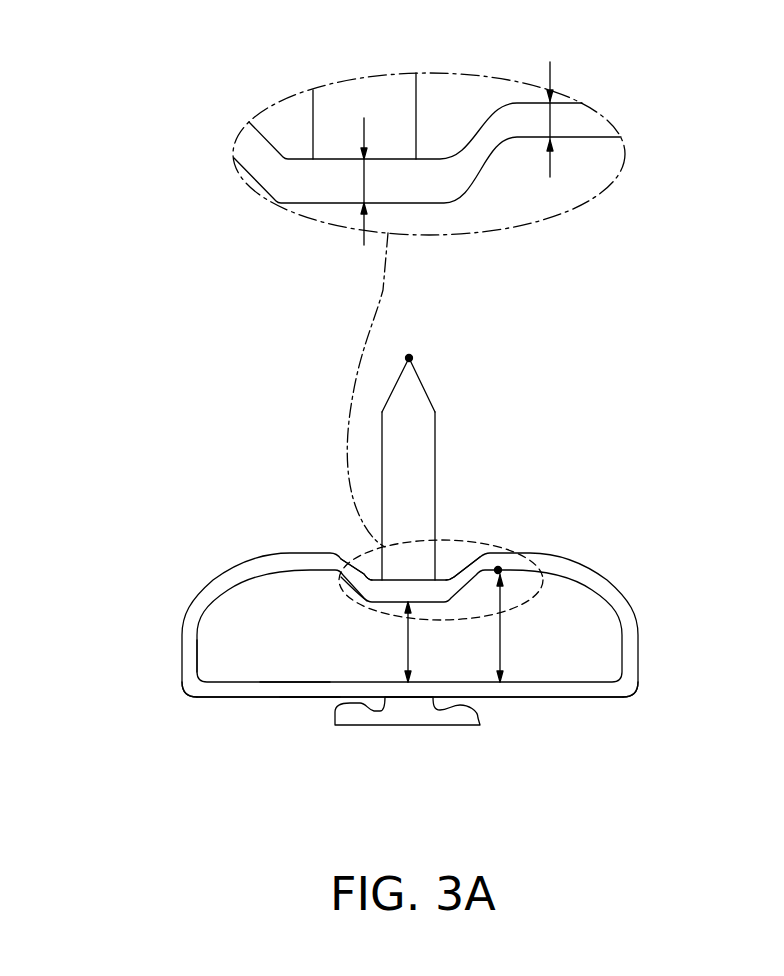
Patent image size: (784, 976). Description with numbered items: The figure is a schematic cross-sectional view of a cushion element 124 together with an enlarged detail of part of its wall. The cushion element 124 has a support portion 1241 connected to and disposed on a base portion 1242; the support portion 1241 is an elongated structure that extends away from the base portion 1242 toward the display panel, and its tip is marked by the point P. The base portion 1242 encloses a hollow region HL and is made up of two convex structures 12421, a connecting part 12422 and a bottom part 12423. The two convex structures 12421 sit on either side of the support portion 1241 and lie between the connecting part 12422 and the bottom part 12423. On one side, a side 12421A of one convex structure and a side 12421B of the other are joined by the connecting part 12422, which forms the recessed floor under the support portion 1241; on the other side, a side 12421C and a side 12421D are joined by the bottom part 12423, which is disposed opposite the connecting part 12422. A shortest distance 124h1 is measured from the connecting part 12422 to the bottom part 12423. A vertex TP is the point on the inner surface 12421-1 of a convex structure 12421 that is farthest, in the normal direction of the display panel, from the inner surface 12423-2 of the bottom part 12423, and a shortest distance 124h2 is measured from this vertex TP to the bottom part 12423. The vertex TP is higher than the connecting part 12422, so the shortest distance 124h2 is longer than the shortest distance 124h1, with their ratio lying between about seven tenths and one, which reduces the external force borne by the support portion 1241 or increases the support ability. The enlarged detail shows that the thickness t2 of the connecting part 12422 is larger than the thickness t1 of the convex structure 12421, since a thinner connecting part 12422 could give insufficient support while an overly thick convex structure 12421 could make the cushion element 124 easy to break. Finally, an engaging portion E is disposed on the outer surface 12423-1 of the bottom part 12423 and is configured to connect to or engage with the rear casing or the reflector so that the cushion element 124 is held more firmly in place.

The cushion element 124 is at (206, 268).
The thickness of the convex structure t1 is at (565, 119).
The thickness of the connecting part t2 is at (380, 181).
The pen tip point P is at (412, 358).
The support portion 1241 is at (440, 460).
The side of convex structure 12421A is at (365, 578).
The connecting part 12422 is at (370, 578).
The side of convex structure 12421B is at (452, 577).
The vertex TP is at (498, 566).
The convex structure 12421 is at (237, 571).
The base portion 1242 is at (435, 621).
The inner surface of the bottom part 12423-2 is at (294, 680).
The inner surface of the convex structure 12421-1 is at (622, 665).
The hollow region HL is at (212, 648).
The bottom part 12423 is at (247, 680).
The shortest distance from the vertex to the bottom part 124h2 is at (502, 622).
The shortest distance from the connecting part to the bottom part 124h1 is at (413, 640).
The side of convex structure 12421C is at (190, 697).
The outer surface of the bottom part 12423-1 is at (310, 697).
The engaging portion E is at (408, 725).
The side of convex structure 12421D is at (625, 694).